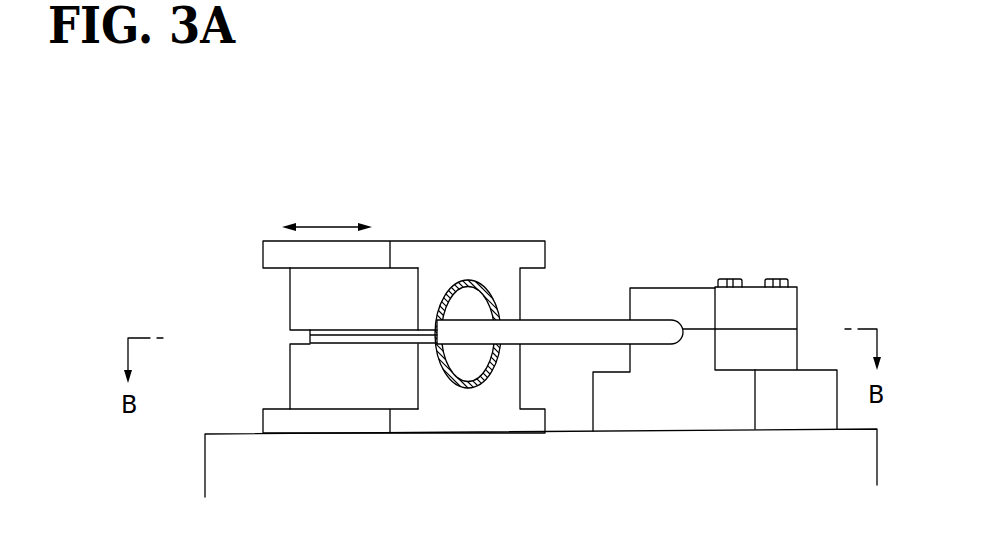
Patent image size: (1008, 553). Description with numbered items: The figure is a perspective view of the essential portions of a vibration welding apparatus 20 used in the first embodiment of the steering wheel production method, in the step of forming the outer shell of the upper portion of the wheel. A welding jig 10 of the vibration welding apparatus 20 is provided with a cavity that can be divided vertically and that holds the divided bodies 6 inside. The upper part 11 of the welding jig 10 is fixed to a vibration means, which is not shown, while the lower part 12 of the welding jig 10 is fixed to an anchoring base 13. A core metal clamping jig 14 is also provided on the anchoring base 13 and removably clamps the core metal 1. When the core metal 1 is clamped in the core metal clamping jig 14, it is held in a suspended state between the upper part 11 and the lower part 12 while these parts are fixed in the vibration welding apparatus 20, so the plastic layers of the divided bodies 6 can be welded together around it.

The core metal 1 is at (575, 327).
The divided body 6 is at (500, 350).
The welding jig 10 is at (294, 338).
The upper part 11 is at (300, 302).
The lower part 12 is at (326, 373).
The anchoring base 13 is at (225, 462).
The core metal clamping jig 14 is at (788, 307).
The vibration welding apparatus 20 is at (241, 276).